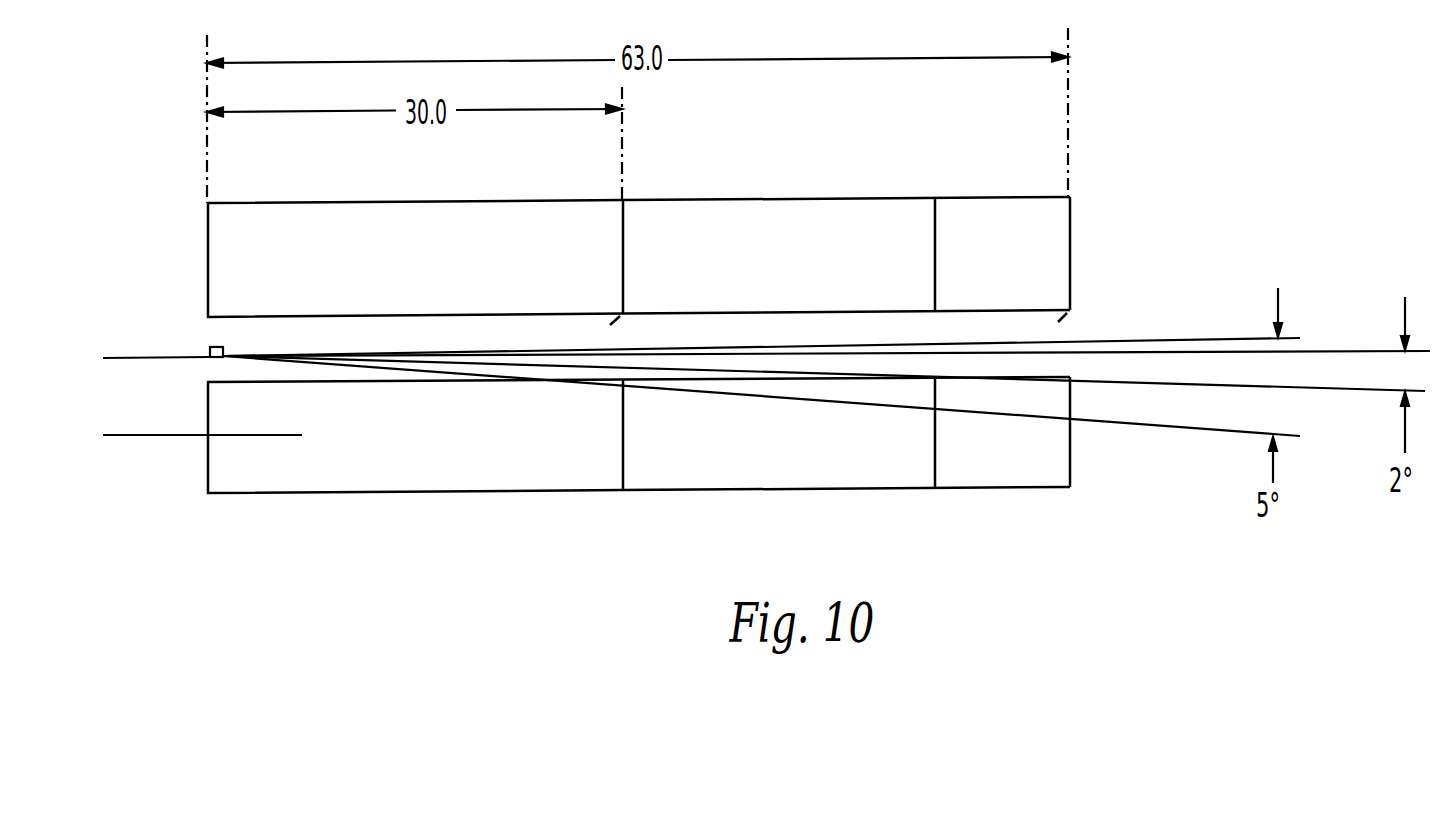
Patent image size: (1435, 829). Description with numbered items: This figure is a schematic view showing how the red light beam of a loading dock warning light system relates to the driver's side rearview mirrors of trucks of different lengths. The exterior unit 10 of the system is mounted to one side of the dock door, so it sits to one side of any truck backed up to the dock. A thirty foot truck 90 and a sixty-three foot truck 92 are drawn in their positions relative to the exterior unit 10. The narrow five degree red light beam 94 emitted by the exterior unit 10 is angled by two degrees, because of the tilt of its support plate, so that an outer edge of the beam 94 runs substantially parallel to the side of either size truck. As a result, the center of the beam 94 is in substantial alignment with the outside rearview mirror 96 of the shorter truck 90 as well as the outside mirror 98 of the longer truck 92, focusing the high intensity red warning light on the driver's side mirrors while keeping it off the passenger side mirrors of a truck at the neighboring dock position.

The exterior unit 10 is at (207, 354).
The 30 foot truck 90 is at (313, 202).
The 63 foot truck 92 is at (773, 197).
The light beam 94 is at (1150, 428).
The outside rearview mirror 96 is at (614, 367).
The outside mirror 98 is at (1062, 366).